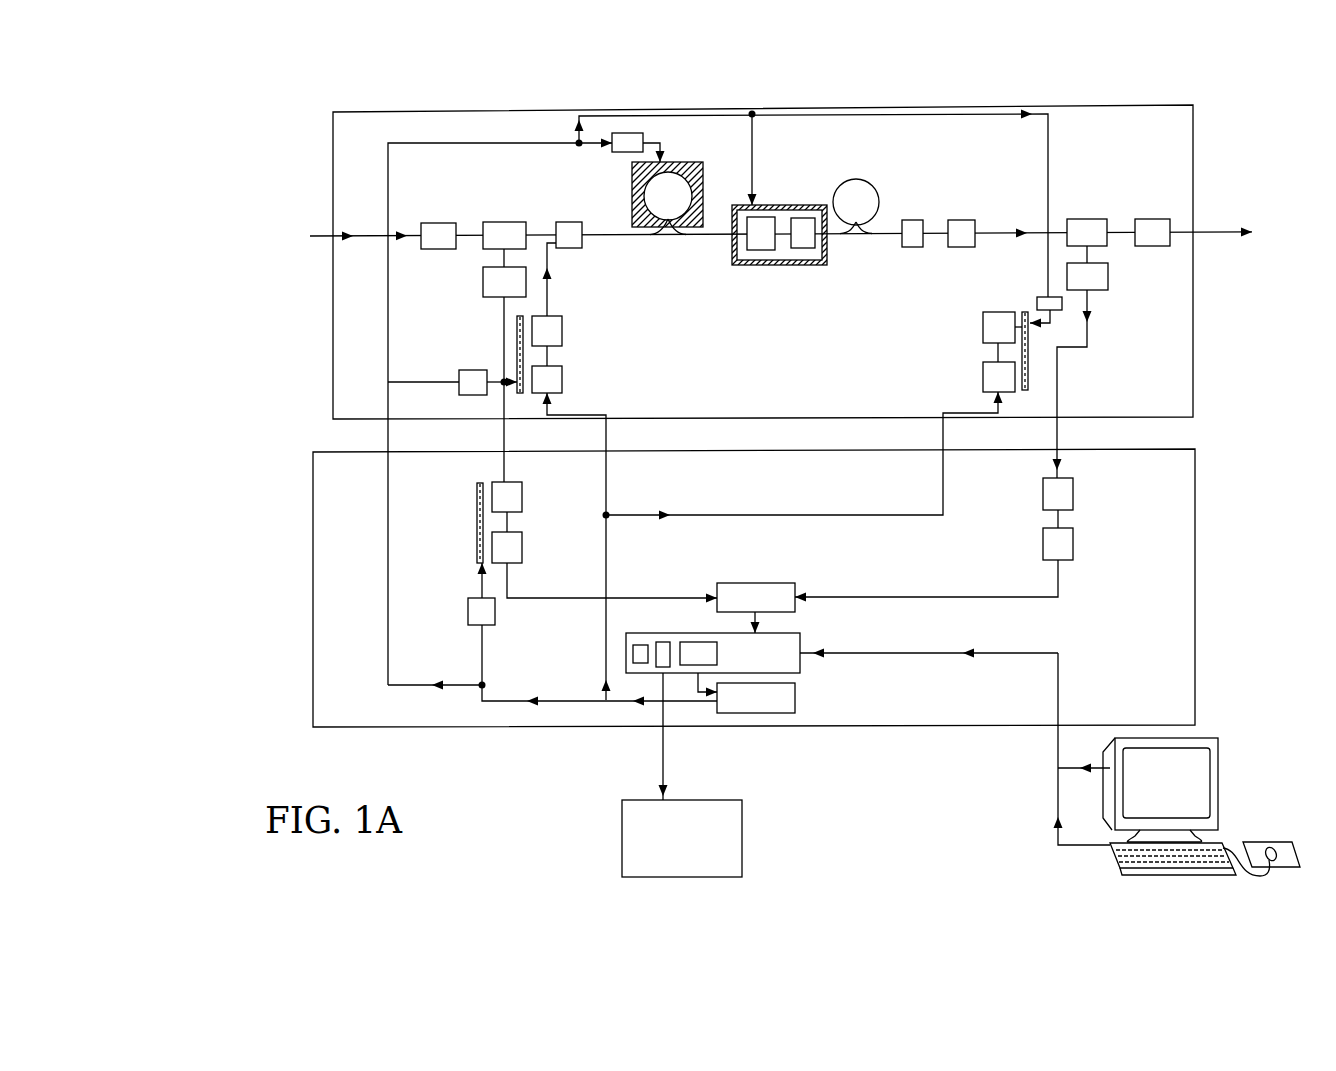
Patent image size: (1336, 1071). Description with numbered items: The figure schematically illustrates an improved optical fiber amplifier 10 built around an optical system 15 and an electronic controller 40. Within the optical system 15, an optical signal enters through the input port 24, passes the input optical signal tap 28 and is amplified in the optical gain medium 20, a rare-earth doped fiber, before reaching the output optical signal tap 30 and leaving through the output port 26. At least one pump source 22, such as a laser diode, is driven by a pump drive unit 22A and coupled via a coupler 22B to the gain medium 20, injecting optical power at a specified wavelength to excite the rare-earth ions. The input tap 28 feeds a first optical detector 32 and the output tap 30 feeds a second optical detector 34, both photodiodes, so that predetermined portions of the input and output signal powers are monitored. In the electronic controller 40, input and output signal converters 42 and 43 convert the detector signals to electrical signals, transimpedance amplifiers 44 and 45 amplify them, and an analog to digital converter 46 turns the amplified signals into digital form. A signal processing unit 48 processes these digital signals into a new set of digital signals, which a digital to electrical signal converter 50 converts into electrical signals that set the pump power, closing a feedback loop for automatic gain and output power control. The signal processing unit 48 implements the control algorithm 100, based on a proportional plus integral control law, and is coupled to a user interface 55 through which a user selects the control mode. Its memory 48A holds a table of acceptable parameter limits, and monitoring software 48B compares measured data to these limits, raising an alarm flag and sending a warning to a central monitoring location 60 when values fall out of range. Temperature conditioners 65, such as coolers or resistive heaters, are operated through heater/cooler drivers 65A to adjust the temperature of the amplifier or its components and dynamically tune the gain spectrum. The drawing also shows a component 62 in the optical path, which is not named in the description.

The optical fiber amplifier 10 is at (236, 168).
The optical system 15 is at (1194, 102).
The optical gain medium 20 is at (704, 197).
The pump source 22 is at (562, 332).
The pump drive unit 22A is at (562, 382).
The coupler 22B is at (583, 240).
The input port 24 is at (440, 223).
The output port 26 is at (1152, 219).
The input optical signal tap 28 is at (503, 222).
The output optical signal tap 30 is at (1084, 219).
The first optical detector 32 is at (483, 284).
The second optical detector 34 is at (1108, 276).
The electronic controller 40 is at (1194, 445).
The input signal converter 42 is at (522, 502).
The output signal converter 43 is at (1073, 495).
The transimpedance amplifier 44 is at (522, 552).
The transimpedance amplifier 45 is at (1073, 545).
The analog to digital converter 46 is at (795, 588).
The signal processing unit 48 is at (800, 641).
The memory 48A is at (633, 655).
The monitoring software 48B is at (660, 642).
The digital to electrical signal converter 50 is at (795, 701).
The user interface 55 is at (1234, 782).
The central monitoring location 60 is at (742, 840).
The optical component 62 is at (802, 265).
The temperature conditioner 65 is at (677, 162).
The heater/cooler driver 65A is at (613, 153).
The control algorithm 100 is at (699, 642).